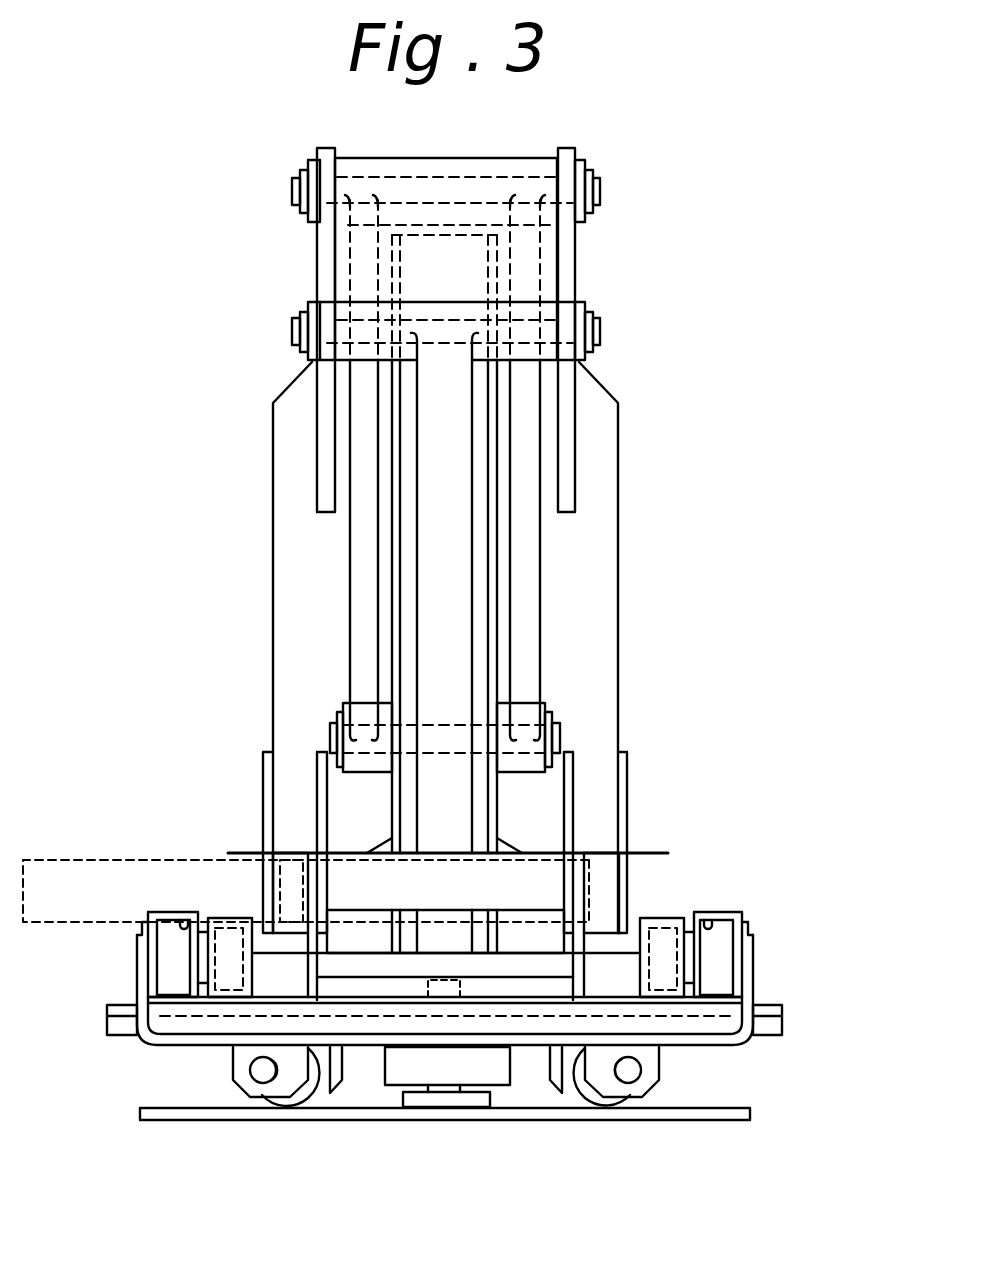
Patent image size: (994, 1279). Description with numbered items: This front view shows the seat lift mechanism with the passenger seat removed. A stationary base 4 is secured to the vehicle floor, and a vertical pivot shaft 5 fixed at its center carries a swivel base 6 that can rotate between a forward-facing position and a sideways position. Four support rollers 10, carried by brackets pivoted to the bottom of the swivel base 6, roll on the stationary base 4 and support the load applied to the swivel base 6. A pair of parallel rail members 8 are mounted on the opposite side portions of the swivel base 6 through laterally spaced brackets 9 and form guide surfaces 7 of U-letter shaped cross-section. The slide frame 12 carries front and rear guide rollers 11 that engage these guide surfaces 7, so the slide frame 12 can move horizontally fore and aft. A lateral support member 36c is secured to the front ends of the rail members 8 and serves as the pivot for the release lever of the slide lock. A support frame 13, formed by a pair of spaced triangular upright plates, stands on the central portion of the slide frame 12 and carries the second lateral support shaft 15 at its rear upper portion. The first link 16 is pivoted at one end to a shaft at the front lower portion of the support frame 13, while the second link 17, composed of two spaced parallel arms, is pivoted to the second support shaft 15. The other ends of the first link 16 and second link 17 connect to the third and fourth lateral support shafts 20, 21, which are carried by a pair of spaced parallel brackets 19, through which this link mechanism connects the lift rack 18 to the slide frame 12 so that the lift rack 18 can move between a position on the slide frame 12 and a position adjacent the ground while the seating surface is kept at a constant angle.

The stationary base 4 is at (548, 1120).
The vertical pivot shaft 5 is at (452, 1102).
The swivel base 6 is at (125, 1028).
The guide surfaces 7 is at (182, 923).
The rail members 8 is at (157, 910).
The brackets 9 is at (118, 1006).
The support rollers 10 is at (308, 1093).
The guide rollers 11 is at (173, 970).
The slide frame 12 is at (233, 940).
The support frame 13 is at (390, 642).
The second lateral support shaft 15 is at (562, 737).
The first link 16 is at (440, 423).
The second link 17 is at (360, 597).
The lift rack 18 is at (287, 525).
The brackets 19 is at (317, 265).
The third lateral support shaft 20 is at (598, 329).
The fourth lateral support shaft 21 is at (598, 190).
The lateral support member 36c is at (713, 1050).